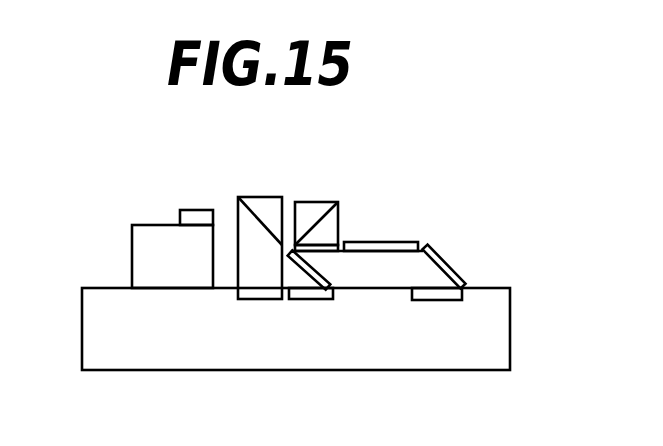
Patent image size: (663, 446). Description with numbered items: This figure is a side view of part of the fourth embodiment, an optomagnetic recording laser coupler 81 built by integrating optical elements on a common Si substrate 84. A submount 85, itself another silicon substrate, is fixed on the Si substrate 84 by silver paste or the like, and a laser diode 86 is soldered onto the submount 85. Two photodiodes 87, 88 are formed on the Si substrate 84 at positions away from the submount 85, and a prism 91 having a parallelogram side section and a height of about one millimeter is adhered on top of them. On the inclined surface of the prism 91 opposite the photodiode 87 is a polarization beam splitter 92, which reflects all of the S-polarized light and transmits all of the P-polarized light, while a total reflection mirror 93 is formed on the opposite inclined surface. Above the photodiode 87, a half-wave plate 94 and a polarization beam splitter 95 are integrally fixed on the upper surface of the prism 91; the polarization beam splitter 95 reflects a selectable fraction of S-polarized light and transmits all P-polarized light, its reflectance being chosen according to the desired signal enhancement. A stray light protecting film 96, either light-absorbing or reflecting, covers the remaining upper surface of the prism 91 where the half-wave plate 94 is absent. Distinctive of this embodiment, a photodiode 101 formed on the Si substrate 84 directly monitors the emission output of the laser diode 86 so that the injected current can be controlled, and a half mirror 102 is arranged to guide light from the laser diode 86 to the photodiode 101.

The optomagnetic recording laser coupler 81 is at (459, 225).
The Si substrate 84 is at (510, 330).
The submount 85 is at (153, 242).
The laser diode 86 is at (193, 215).
The photodiode 87 is at (318, 308).
The photodiode 88 is at (438, 307).
The prism 91 is at (397, 277).
The polarization beam splitter 92 is at (297, 268).
The total reflection mirror 93 is at (462, 275).
The λ/2 plate 94 is at (328, 247).
The polarization beam splitter 95 is at (322, 215).
The stray light protecting film 96 is at (397, 242).
The photodiode 101 is at (250, 308).
The half mirror 102 is at (262, 213).